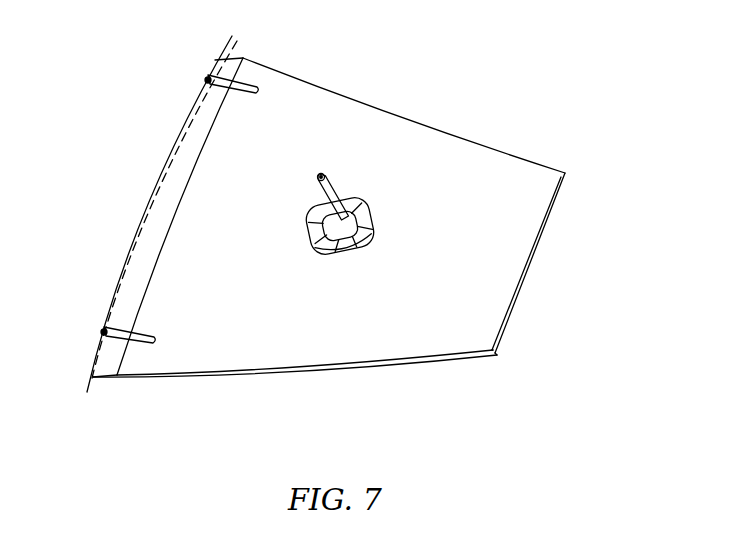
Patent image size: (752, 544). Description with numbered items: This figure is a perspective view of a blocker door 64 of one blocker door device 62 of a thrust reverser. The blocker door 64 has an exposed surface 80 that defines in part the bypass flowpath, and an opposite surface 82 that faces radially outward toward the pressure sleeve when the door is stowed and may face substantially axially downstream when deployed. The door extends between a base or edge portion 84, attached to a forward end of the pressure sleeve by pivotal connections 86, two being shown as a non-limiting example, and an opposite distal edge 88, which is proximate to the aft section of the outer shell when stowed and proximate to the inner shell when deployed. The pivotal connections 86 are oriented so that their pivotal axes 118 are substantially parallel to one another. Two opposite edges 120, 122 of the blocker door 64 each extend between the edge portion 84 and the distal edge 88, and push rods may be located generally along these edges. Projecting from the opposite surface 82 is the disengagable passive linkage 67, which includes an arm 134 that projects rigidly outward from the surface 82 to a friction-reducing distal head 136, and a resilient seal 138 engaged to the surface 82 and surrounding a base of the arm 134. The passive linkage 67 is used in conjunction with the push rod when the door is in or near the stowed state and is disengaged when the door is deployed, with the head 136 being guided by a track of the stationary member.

The blocker door device 62 is at (468, 76).
The blocker door 64 is at (580, 145).
The disengagable passive linkage 67 is at (388, 187).
The exposed surface 80 is at (425, 363).
The opposite surface 82 is at (518, 228).
The edge portion 84 is at (141, 222).
The pivotal connection 86 is at (206, 80).
The distal edge 88 is at (524, 287).
The pivotal axes 118 is at (235, 37).
The edge 120 is at (313, 368).
The edge 122 is at (452, 134).
The arm 134 is at (345, 185).
The head 136 is at (319, 175).
The resilient seal 138 is at (362, 218).